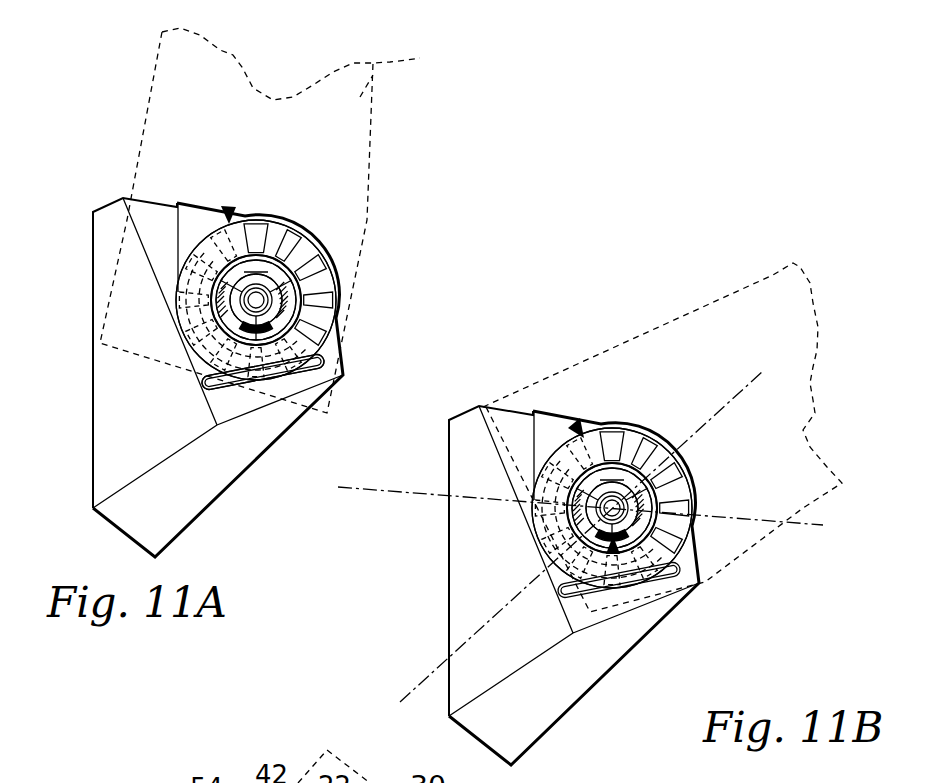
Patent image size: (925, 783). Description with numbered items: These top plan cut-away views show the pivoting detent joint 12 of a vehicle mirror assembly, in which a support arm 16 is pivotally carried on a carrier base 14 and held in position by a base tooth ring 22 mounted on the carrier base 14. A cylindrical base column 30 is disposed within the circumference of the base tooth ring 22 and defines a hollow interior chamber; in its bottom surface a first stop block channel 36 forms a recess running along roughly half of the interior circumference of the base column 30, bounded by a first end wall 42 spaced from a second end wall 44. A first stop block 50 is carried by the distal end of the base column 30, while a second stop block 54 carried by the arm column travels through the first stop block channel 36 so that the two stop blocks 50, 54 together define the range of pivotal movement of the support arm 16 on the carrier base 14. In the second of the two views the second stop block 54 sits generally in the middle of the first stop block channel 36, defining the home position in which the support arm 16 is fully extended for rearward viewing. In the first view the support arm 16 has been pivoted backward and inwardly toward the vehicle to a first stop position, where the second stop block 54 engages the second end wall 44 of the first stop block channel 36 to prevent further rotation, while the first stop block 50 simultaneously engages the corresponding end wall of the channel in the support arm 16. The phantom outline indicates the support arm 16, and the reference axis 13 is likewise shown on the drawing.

In FIG. 11A, the detent joint 12 is at (606, 518).
In FIG. 11A, the second axis 13 is at (601, 515).
In FIG. 11A, the carrier base 14 is at (172, 521).
In FIG. 11B, the carrier base 14 is at (457, 584).
In FIG. 11A, the support arm 16 is at (278, 220).
In FIG. 11B, the support arm 16 is at (782, 273).
In FIG. 11A, the base tooth ring 22 is at (228, 206).
In FIG. 11B, the base tooth ring 22 is at (575, 422).
In FIG. 11A, the cylindrical base column 30 is at (290, 232).
In FIG. 11B, the cylindrical base column 30 is at (634, 445).
In FIG. 11A, the first stop block channel 36 is at (234, 306).
In FIG. 11B, the first stop block channel 36 is at (613, 553).
In FIG. 11A, the first end wall 42 is at (237, 282).
In FIG. 11B, the first end wall 42 is at (587, 480).
In FIG. 11A, the second end wall 44 is at (310, 316).
In FIG. 11B, the second end wall 44 is at (628, 565).
In FIG. 11A, the first stop block 50 is at (302, 290).
In FIG. 11B, the first stop block 50 is at (692, 502).
In FIG. 11A, the second stop block 54 is at (240, 342).
In FIG. 11B, the second stop block 54 is at (577, 506).